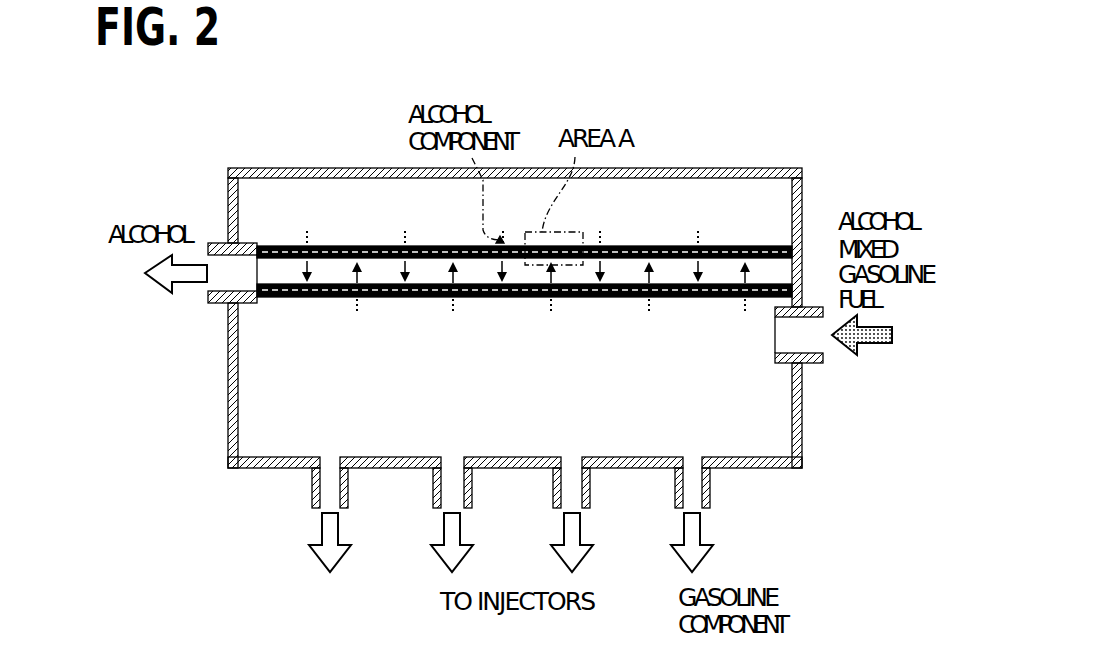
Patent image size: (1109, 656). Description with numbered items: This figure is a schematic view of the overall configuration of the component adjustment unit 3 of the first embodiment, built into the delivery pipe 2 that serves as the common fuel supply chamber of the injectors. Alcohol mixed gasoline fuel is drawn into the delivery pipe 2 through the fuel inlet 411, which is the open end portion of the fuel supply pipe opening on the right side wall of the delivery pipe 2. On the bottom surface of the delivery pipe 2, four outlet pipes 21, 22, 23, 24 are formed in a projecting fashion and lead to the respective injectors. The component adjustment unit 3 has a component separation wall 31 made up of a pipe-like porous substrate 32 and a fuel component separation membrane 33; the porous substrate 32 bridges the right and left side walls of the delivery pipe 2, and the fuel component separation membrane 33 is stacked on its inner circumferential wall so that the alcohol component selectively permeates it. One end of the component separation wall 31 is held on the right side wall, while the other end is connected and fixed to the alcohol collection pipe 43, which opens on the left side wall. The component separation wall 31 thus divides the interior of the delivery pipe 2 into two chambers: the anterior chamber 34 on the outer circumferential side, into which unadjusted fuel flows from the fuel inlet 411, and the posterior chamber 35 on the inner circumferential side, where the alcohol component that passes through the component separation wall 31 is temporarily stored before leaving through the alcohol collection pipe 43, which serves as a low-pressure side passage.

The delivery pipe 2 is at (768, 168).
The component adjustment unit 3 is at (733, 160).
The outlet pipe 21 is at (310, 490).
The outlet pipe 22 is at (431, 490).
The outlet pipe 23 is at (591, 487).
The outlet pipe 24 is at (711, 487).
The component separation wall 31 is at (325, 300).
The porous substrate 32 is at (658, 247).
The fuel component separation membrane 33 is at (481, 262).
The anterior chamber 34 is at (285, 215).
The posterior chamber 35 is at (282, 273).
The alcohol collection pipe 43 is at (223, 280).
The fuel inlet 411 is at (816, 363).